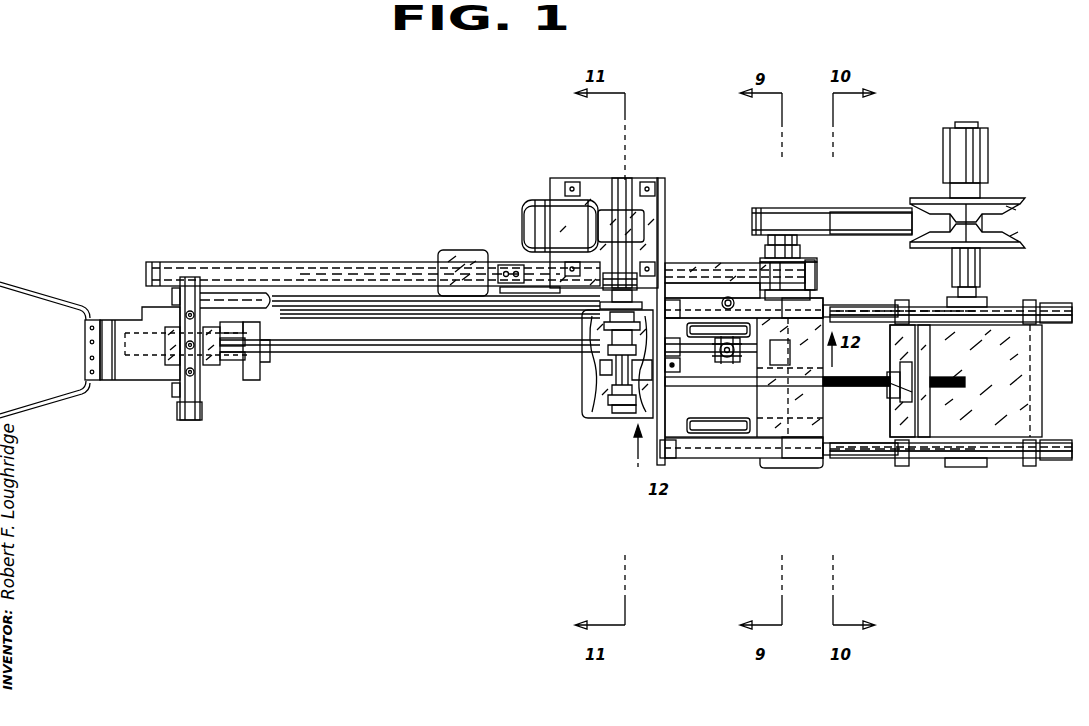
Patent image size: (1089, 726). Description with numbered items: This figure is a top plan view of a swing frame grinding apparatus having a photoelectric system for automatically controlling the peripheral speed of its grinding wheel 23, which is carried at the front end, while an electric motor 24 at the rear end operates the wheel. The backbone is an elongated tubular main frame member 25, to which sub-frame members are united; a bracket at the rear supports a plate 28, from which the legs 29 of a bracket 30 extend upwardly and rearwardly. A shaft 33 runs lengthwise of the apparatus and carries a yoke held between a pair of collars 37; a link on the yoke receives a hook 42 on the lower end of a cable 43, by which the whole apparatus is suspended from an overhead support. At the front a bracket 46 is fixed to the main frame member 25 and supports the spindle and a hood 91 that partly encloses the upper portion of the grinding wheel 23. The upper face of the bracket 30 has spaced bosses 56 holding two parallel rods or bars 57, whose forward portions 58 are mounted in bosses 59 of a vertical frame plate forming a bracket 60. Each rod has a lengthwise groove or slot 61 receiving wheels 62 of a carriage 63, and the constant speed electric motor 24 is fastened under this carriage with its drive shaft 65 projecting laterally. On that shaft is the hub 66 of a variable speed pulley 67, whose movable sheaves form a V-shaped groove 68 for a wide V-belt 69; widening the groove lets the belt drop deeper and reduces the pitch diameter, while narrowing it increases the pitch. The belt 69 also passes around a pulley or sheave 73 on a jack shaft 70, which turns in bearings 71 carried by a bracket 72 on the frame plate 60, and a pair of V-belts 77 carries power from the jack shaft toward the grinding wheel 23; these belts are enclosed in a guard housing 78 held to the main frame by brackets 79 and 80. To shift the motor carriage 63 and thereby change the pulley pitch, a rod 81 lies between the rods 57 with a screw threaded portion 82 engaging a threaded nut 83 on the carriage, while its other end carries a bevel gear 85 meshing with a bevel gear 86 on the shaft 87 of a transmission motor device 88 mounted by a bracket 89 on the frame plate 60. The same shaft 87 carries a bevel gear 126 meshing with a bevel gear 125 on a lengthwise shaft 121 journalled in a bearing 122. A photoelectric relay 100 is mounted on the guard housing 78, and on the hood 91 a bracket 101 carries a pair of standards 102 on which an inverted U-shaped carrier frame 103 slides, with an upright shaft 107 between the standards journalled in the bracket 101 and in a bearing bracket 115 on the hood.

The grinding wheel 23 is at (125, 358).
The electric motor 24 is at (965, 468).
The main frame member 25 is at (378, 316).
The plate 28 is at (676, 420).
The legs 29 is at (746, 298).
The bracket 30 is at (812, 410).
The shaft 33 is at (678, 372).
The collars 37 is at (718, 378).
The hook 42 is at (734, 364).
The cable 43 is at (720, 364).
The bracket 46 is at (232, 292).
The bosses 56 is at (825, 300).
The rods or bars 57 is at (848, 305).
The portions 58 is at (700, 298).
The bosses 59 is at (678, 300).
The bracket 60 is at (665, 190).
The groove or slot 61 is at (1058, 305).
The wheels 62 is at (900, 300).
The carriage 63 is at (1018, 378).
The drive shaft 65 is at (985, 292).
The hub 66 is at (978, 268).
The variable speed pulley 67 is at (1000, 192).
The V-shaped groove 68 is at (1008, 226).
The wide V-belt 69 is at (878, 212).
The jack shaft 70 is at (805, 248).
The bearings 71 is at (812, 272).
The bracket 72 is at (742, 262).
The pulley or sheave 73 is at (798, 208).
The V-belts 77 is at (378, 266).
The guard housing 78 is at (286, 262).
The bracket 79 is at (312, 306).
The bracket 80 is at (500, 294).
The rod 81 is at (842, 378).
The screw threaded portion 82 is at (944, 387).
The threaded nut 83 is at (890, 398).
The bevel gear 85 is at (632, 378).
The bevel gear 86 is at (605, 402).
The shaft 87 is at (612, 368).
The transmission motor arrangement or device 88 is at (530, 210).
The bracket 89 is at (556, 185).
The hood 91 is at (96, 385).
The photoelectric relay 100 is at (450, 250).
The bracket 101 is at (155, 385).
The standards 102 is at (186, 315).
The carrier frame 103 is at (185, 422).
The shaft 107 is at (205, 368).
The bearing bracket 115 is at (245, 370).
The shaft 121 is at (430, 354).
The bearing 122 is at (584, 320).
The bevel gear 125 is at (612, 356).
The bevel gear 126 is at (650, 300).